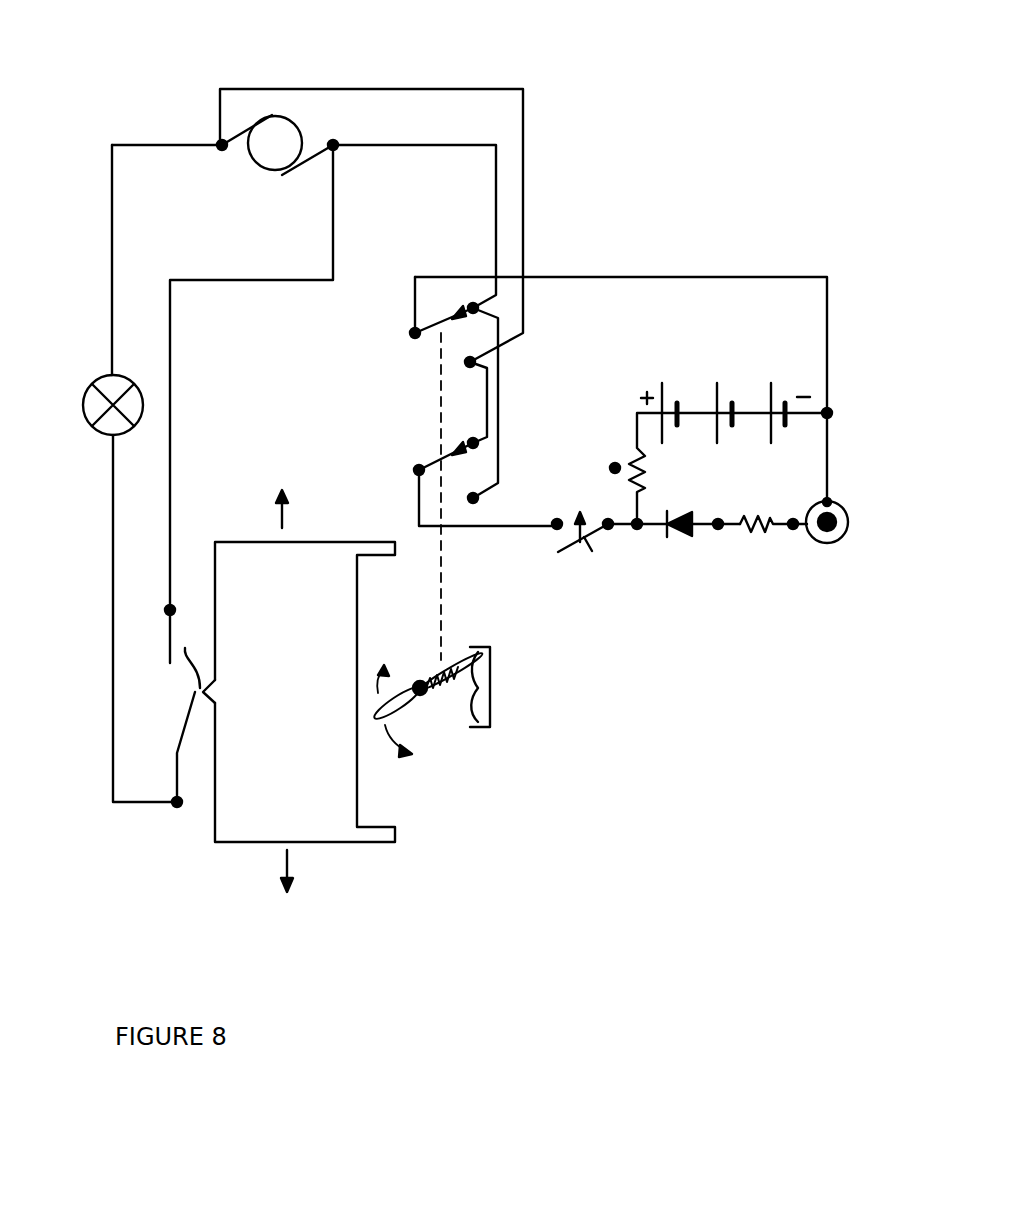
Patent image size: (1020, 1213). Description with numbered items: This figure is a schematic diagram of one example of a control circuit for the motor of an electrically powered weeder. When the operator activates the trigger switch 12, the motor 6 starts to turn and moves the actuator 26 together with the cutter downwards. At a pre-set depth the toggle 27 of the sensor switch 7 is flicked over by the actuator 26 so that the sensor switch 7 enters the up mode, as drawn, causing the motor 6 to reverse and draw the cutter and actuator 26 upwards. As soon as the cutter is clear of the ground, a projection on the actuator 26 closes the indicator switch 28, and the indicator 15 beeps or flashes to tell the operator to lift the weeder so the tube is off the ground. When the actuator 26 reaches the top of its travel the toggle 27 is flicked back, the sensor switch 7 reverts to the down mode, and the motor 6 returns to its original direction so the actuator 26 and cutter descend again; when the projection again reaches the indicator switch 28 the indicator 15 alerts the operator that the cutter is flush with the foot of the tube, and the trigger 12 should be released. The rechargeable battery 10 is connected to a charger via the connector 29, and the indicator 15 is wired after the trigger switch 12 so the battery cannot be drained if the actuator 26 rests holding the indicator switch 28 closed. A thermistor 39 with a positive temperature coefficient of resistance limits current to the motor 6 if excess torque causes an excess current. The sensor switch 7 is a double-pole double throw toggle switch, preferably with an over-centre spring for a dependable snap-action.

The motor 6 is at (270, 137).
The sensor switch 7 is at (467, 397).
The rechargeable battery 10 is at (780, 432).
The trigger switch 12 is at (577, 543).
The indicator 15 is at (98, 410).
The actuator 26 is at (299, 705).
The toggle 27 is at (403, 708).
The indicator switch 28 is at (200, 693).
The connector 29 is at (842, 542).
The thermistor 39 is at (612, 464).